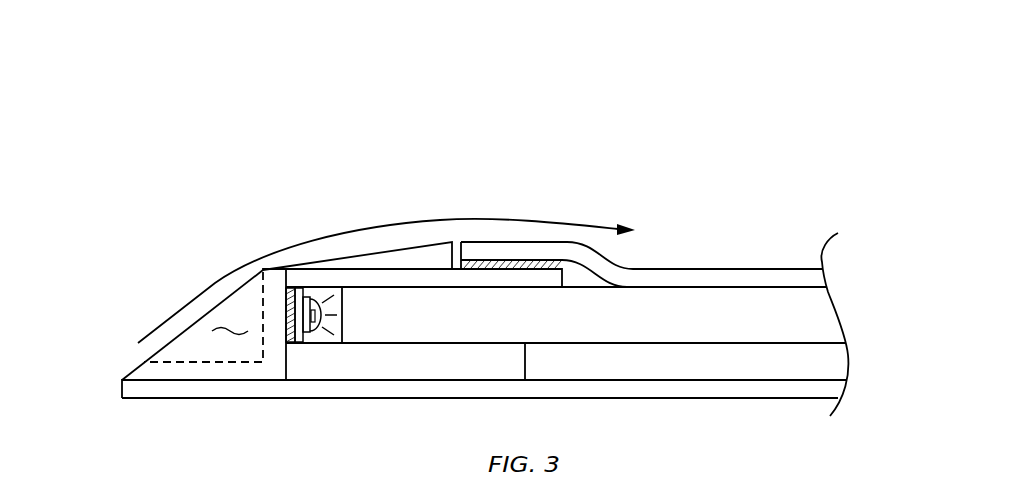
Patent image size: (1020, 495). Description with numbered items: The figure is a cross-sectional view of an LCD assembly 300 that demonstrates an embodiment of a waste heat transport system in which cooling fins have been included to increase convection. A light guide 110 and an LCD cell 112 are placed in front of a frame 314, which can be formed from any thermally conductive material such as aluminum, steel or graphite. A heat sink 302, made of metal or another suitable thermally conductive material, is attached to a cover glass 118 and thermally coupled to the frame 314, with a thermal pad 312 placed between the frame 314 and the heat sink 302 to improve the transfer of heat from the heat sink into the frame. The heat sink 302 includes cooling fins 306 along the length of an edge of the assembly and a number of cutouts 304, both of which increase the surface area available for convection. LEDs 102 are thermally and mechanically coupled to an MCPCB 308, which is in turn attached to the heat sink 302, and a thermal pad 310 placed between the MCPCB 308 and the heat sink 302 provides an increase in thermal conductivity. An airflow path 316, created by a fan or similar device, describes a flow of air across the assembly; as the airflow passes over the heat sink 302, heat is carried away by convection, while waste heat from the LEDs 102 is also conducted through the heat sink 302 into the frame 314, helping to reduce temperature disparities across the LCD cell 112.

The LCD assembly 300 is at (148, 88).
The LEDs 102 is at (309, 296).
The light guide 110 is at (826, 297).
The LCD cell 112 is at (848, 357).
The cover glass 118 is at (122, 388).
The heat sink 302 is at (182, 332).
The cutouts 304 is at (232, 328).
The cooling fins 306 is at (428, 243).
The MCPCB 308 is at (289, 288).
The thermal pad 310 is at (297, 288).
The thermal pad 312 is at (512, 262).
The frame 314 is at (663, 268).
The airflow path 316 is at (367, 225).